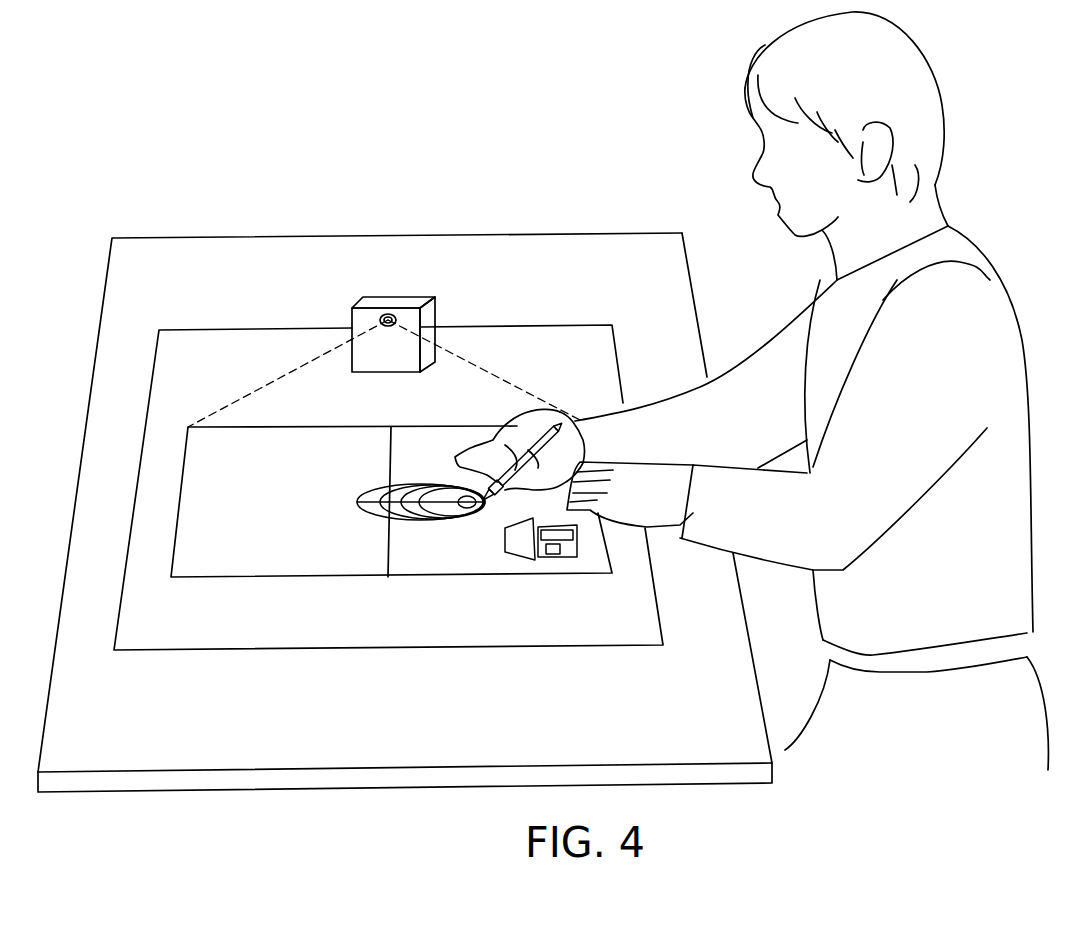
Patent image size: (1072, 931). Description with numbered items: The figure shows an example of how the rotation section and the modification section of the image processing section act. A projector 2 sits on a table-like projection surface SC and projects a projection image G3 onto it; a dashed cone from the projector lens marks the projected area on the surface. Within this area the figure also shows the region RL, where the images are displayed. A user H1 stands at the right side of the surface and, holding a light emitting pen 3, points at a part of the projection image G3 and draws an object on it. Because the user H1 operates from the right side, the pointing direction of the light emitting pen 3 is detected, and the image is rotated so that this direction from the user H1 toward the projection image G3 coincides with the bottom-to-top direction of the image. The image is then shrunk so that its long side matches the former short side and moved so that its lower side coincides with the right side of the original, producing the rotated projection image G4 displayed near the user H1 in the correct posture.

The projection surface SC is at (595, 258).
The projector 2 is at (382, 303).
The light emitting pen 3 is at (537, 400).
The projection image G3 is at (320, 457).
The rotated projection image G4 is at (450, 420).
The projection region RL is at (507, 578).
The user H1 is at (960, 247).